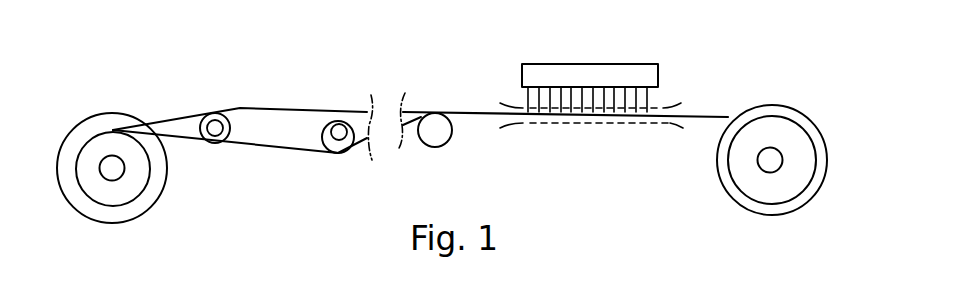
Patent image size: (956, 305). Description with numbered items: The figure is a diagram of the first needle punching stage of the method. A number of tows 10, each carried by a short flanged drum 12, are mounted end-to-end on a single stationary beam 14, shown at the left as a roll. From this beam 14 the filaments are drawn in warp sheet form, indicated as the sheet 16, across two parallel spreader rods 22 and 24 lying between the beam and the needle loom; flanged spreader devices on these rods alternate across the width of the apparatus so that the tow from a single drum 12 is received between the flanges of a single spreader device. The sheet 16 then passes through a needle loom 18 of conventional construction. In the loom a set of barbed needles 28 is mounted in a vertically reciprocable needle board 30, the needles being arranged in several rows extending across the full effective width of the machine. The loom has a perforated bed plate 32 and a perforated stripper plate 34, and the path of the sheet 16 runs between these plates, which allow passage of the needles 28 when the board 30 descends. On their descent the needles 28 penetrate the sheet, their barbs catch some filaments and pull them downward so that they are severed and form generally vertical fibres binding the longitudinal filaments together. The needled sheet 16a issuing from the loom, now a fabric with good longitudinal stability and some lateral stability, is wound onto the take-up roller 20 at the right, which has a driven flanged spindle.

The tow 10 is at (93, 192).
The short flanged drum 12 is at (82, 135).
The stationary beam 14 is at (122, 175).
The warp sheet 16 is at (177, 118).
The needled sheet 16a is at (720, 115).
The needle loom 18 is at (598, 104).
The take-up roller 20 is at (788, 140).
The spreader rod 22 is at (218, 142).
The spreader rod 24 is at (340, 136).
The barbed needles 28 is at (586, 97).
The needle board 30 is at (632, 75).
The bed plate 32 is at (518, 125).
The stripper plate 34 is at (519, 108).